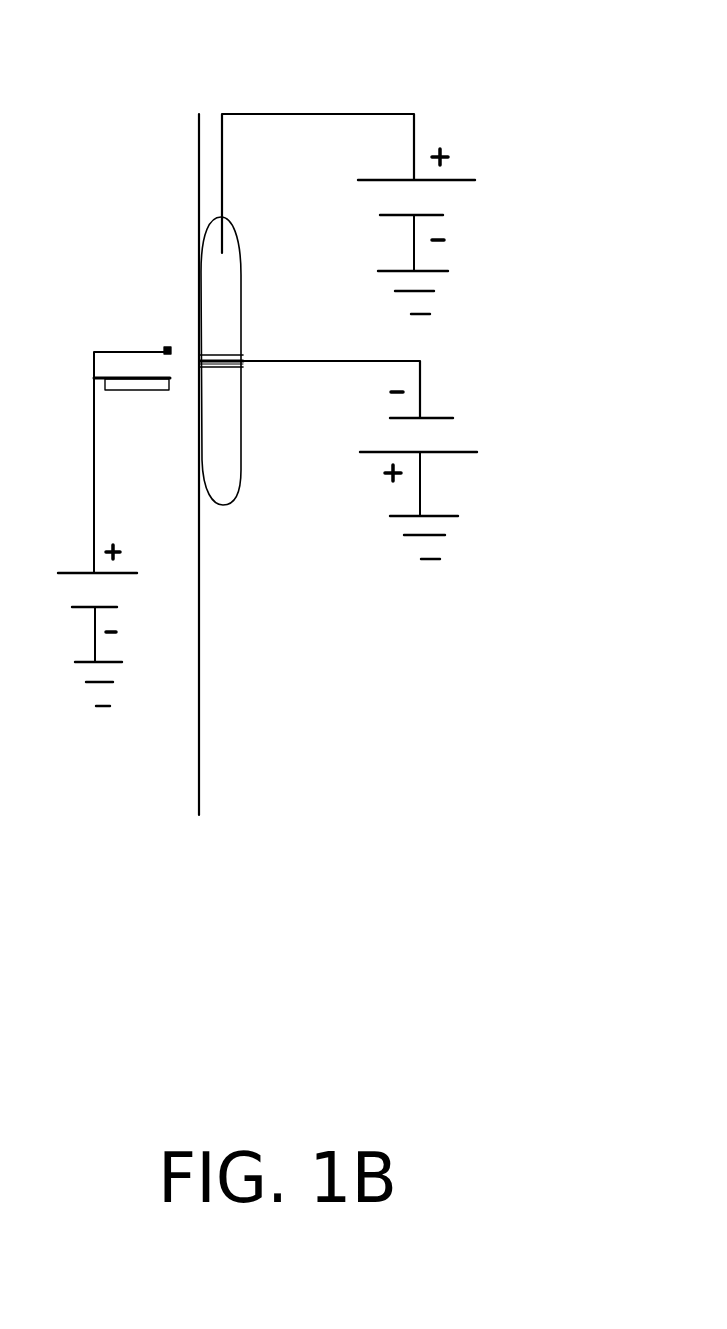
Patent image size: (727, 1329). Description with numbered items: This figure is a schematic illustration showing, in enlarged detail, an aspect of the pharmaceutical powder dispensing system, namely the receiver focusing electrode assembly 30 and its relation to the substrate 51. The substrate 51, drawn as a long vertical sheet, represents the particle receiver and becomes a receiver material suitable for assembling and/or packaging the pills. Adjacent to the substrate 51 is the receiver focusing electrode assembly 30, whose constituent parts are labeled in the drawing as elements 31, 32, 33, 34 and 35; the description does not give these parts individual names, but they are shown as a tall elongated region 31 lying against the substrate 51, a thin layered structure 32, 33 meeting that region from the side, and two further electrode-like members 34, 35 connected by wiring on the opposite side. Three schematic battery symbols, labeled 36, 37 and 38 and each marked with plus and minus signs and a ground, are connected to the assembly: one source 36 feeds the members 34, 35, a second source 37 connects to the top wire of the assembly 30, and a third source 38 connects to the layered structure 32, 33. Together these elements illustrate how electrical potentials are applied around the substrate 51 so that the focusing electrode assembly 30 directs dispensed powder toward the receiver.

The receiver focusing electrode assembly 30 is at (283, 87).
The plasma (discharge region) 31 is at (222, 298).
The insulating layer 32 is at (228, 367).
The electrode (anode) 33 is at (243, 360).
The electrode 34 is at (168, 392).
The electrode (cathode tip) 35 is at (168, 345).
The voltage source 36 is at (115, 594).
The voltage source 37 is at (416, 138).
The voltage source 38 is at (421, 390).
The substrate 51 is at (200, 690).